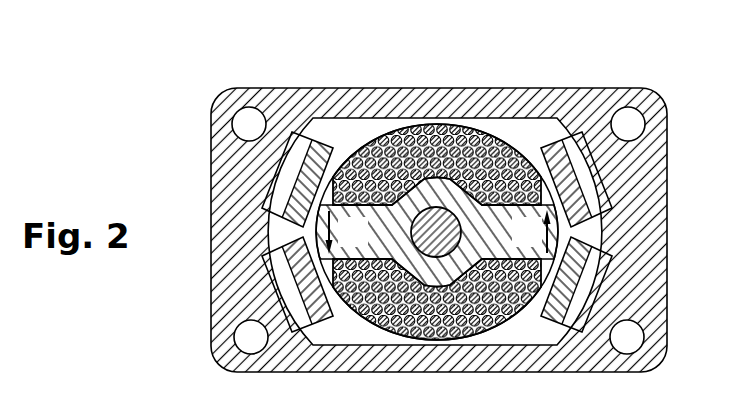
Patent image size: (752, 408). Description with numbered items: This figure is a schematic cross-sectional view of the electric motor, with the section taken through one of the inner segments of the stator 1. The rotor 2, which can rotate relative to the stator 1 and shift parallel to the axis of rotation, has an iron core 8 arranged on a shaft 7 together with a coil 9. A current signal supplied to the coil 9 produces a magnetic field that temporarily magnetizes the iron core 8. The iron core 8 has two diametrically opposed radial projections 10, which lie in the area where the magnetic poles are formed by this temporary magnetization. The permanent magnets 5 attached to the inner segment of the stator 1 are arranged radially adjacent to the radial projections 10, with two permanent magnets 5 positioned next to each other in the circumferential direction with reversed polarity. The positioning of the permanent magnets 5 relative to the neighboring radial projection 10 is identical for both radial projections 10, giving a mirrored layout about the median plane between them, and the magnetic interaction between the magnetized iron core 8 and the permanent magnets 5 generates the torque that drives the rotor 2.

The stator 1 is at (217, 73).
The rotor 2 is at (347, 130).
The permanent magnets 5 is at (580, 128).
The shaft 7 is at (436, 228).
The iron core 8 is at (455, 138).
The coil 9 is at (488, 145).
The radial projections 10 is at (523, 150).